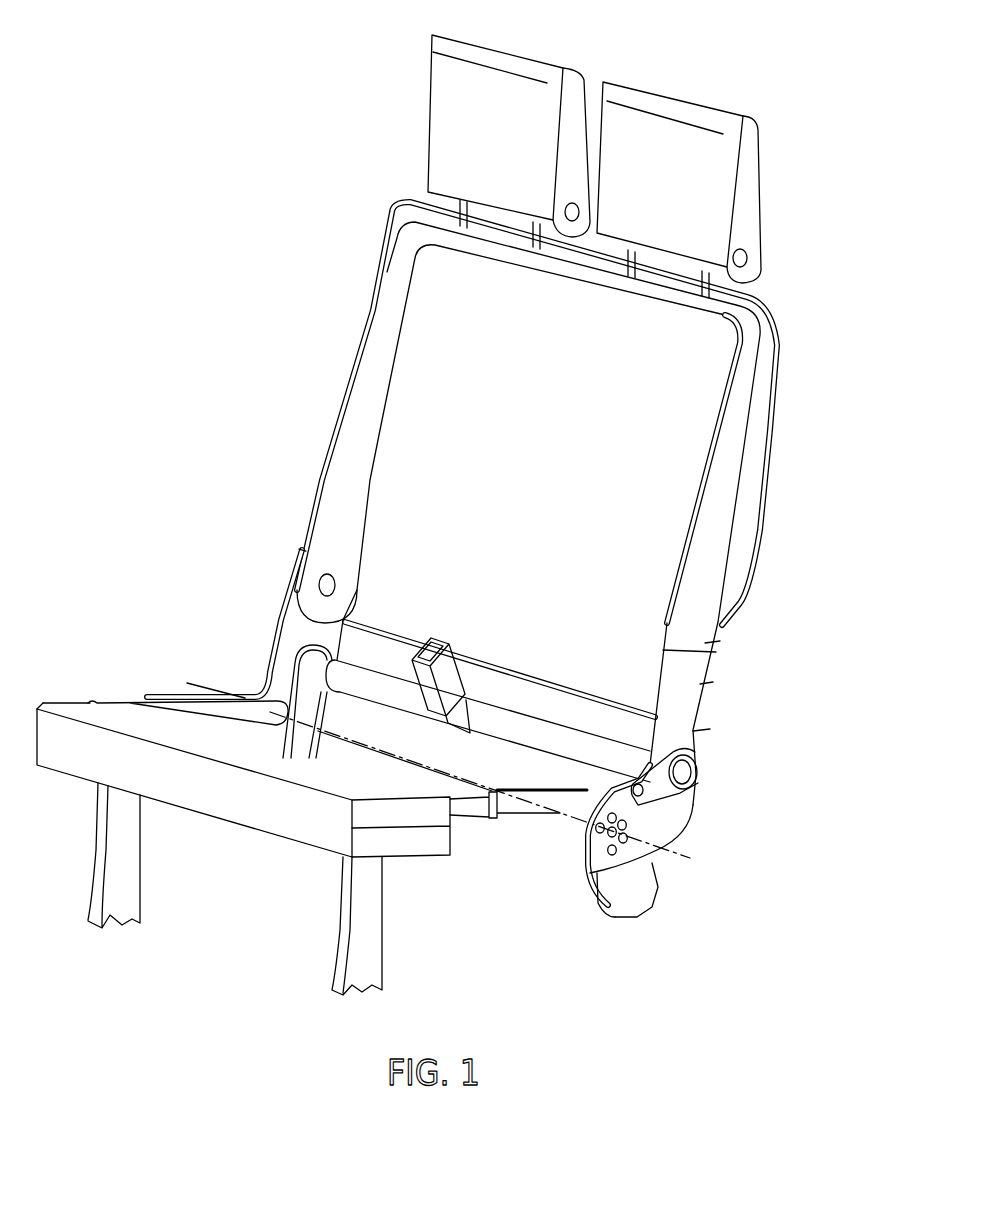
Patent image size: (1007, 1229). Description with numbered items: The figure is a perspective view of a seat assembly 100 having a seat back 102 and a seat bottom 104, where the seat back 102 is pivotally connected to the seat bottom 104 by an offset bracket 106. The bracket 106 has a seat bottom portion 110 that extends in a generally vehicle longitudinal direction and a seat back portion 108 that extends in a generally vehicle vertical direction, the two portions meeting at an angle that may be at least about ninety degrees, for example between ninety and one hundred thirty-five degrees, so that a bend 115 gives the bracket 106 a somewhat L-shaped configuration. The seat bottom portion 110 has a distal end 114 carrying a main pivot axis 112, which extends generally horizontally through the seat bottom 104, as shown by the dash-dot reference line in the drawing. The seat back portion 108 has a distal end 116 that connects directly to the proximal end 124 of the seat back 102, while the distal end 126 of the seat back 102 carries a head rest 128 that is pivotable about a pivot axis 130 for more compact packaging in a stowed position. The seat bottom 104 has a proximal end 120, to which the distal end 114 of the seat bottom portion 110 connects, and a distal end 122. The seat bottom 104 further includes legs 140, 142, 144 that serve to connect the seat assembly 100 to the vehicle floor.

The seat assembly 100 is at (180, 210).
The seat back 102 is at (793, 463).
The seat bottom 104 is at (175, 685).
The bracket 106 is at (725, 770).
The seat back portion 108 is at (693, 730).
The seat bottom portion 110 is at (647, 830).
The main pivot axis 112 is at (595, 887).
The distal end 114 is at (597, 840).
The bend 115 is at (688, 804).
The distal end 116 is at (703, 683).
The proximal end 120 is at (570, 807).
The distal end 122 is at (258, 815).
The proximal end 124 is at (713, 643).
The distal end 126 is at (780, 333).
The head rest 128 is at (656, 130).
The pivot axis 130 is at (748, 258).
The leg 140 is at (110, 910).
The leg 142 is at (345, 990).
The leg 144 is at (630, 897).